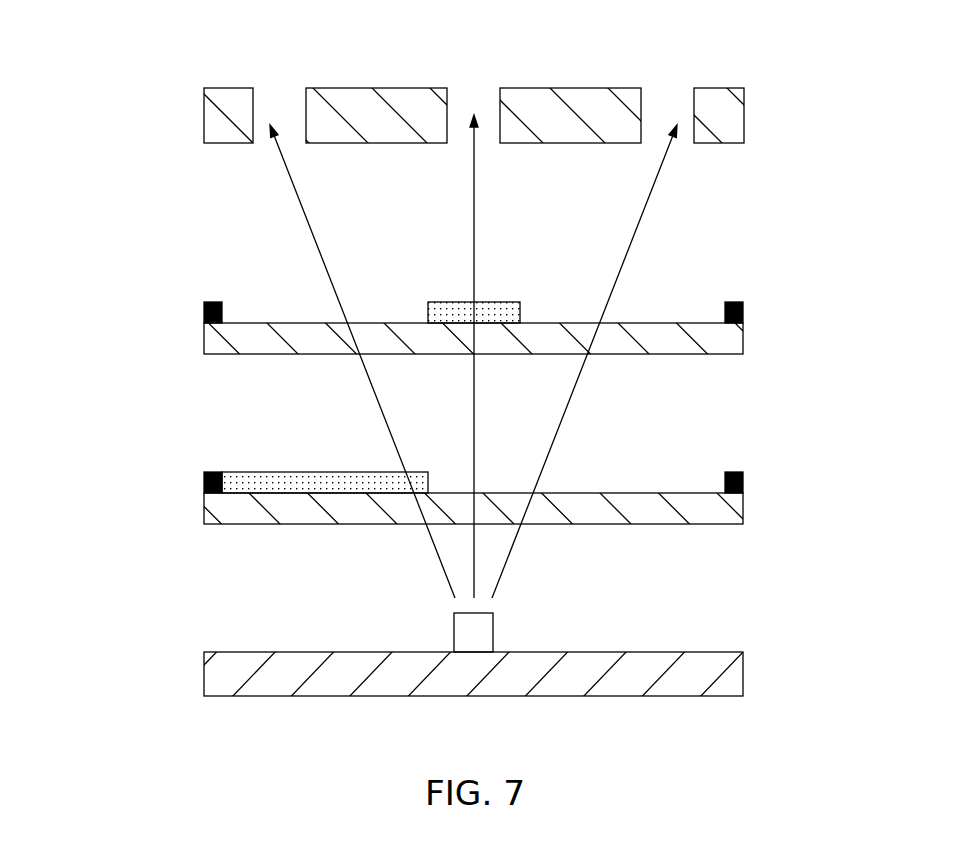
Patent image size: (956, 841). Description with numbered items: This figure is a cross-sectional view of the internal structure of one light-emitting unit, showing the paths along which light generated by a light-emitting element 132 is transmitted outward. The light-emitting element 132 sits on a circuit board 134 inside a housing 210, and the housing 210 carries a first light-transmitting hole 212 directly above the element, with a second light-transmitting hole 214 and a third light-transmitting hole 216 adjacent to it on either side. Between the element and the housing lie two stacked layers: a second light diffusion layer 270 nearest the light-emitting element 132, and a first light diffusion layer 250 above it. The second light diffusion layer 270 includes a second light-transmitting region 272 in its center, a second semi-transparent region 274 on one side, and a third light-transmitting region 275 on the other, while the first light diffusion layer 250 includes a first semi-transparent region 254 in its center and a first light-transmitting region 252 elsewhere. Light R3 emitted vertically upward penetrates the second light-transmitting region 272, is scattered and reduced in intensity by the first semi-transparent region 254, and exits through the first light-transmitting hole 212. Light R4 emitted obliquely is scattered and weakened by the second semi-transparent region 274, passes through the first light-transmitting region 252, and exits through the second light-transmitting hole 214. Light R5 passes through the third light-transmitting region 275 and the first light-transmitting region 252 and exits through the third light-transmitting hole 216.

The light-emitting element 132 is at (493, 623).
The circuit board 134 is at (204, 680).
The housing 210 is at (456, 73).
The first light-transmitting hole 212 is at (470, 81).
The second light-transmitting hole 214 is at (278, 81).
The third light-transmitting hole 216 is at (668, 81).
The first light diffusion layer 250 is at (204, 341).
The first light-transmitting region 252 is at (262, 282).
The first semi-transparent region 254 is at (441, 282).
The second light diffusion layer 270 is at (204, 506).
The second light-transmitting region 272 is at (448, 452).
The second semi-transparent region 274 is at (303, 452).
The third light-transmitting region 275 is at (648, 452).
The light R3 is at (474, 417).
The light R4 is at (442, 565).
The light R5 is at (637, 228).